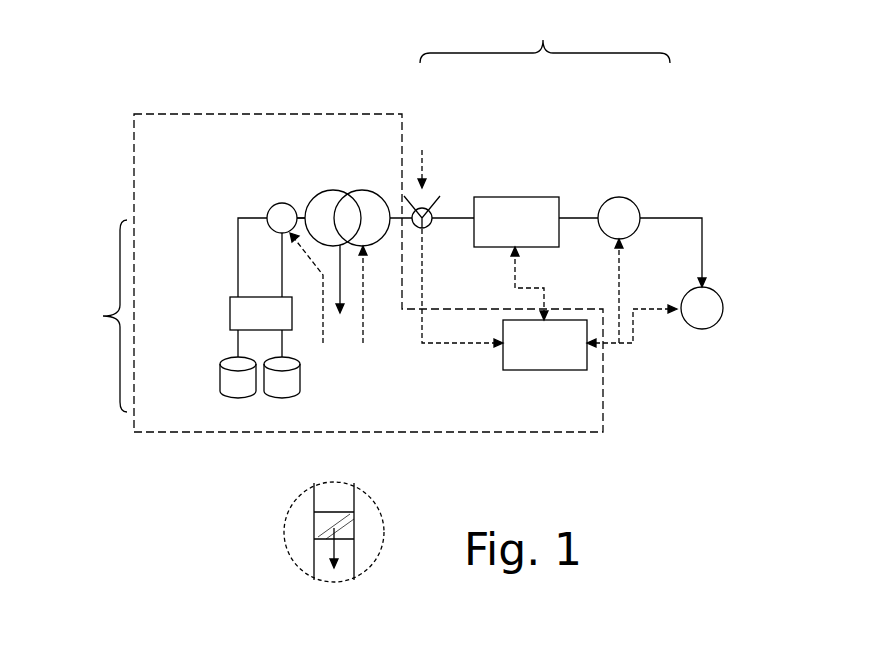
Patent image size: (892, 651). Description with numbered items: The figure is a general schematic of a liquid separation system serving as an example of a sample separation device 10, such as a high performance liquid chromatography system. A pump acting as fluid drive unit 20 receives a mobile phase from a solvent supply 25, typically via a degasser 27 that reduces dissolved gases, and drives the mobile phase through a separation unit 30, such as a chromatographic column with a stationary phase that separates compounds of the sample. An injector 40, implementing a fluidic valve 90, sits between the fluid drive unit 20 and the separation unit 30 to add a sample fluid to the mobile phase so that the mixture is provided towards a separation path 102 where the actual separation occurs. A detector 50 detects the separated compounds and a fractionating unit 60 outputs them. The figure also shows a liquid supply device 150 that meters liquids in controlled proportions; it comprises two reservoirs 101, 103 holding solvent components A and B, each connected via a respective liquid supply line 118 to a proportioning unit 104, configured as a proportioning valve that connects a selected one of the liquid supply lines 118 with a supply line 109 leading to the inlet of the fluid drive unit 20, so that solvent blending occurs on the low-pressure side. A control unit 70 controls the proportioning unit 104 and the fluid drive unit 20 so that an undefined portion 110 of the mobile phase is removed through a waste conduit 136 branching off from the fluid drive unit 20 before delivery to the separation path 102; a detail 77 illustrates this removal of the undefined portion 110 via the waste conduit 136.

The sample separation device 10 is at (692, 150).
The fluid drive unit 20 is at (348, 196).
The solvent supply 25 is at (103, 316).
The degasser 27 is at (230, 312).
The separation unit 30 is at (515, 197).
The injector 40 is at (430, 205).
The detector 50 is at (619, 197).
The fractionating unit 60 is at (705, 328).
The control unit 70 is at (545, 370).
The detail 77 is at (280, 520).
The fluidic valve 90 is at (426, 238).
The reservoir 101 is at (238, 398).
The separation path 102 is at (545, 36).
The reservoir 103 is at (290, 398).
The proportioning unit 104 is at (280, 203).
The supply line 109 is at (300, 216).
The undefined portion 110 is at (340, 522).
The liquid supply line 118 is at (282, 268).
The waste conduit 136 is at (342, 482).
The liquid supply device 150 is at (372, 114).